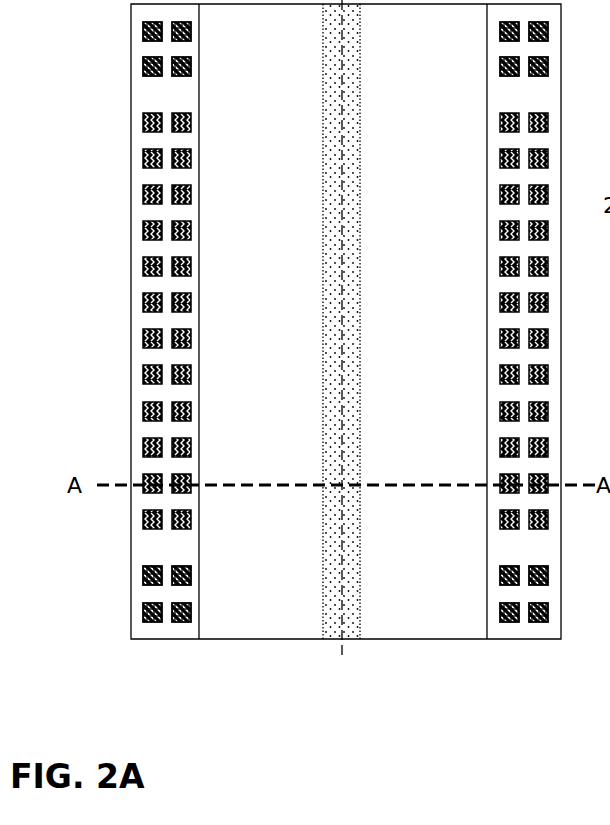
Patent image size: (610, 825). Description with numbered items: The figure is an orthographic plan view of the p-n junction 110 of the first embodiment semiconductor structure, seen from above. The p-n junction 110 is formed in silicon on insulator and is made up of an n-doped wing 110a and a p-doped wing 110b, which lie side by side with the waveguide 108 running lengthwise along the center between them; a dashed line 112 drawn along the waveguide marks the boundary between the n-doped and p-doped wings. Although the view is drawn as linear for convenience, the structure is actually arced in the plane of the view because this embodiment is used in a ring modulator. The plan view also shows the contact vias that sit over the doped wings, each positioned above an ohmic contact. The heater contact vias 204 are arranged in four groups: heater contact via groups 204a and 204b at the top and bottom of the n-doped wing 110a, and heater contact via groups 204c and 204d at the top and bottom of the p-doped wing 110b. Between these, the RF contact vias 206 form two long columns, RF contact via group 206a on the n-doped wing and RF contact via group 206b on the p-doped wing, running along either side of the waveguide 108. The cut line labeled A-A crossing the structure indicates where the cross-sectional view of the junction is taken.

The p-n junction 110 is at (284, 370).
The n-doped wing 110a is at (343, 668).
The p-doped wing 110b is at (563, 668).
The waveguide 108 is at (353, 238).
The dashed line 112 is at (341, 118).
The heater contact via 204 is at (196, 608).
The heater contact via group 204a is at (131, 15).
The heater contact via group 204b is at (159, 592).
The heater contact via group 204c is at (493, 15).
The heater contact via group 204d is at (491, 556).
The RF contact via 206 is at (124, 167).
The RF contact via group 206a is at (178, 321).
The RF contact via group 206b is at (499, 103).